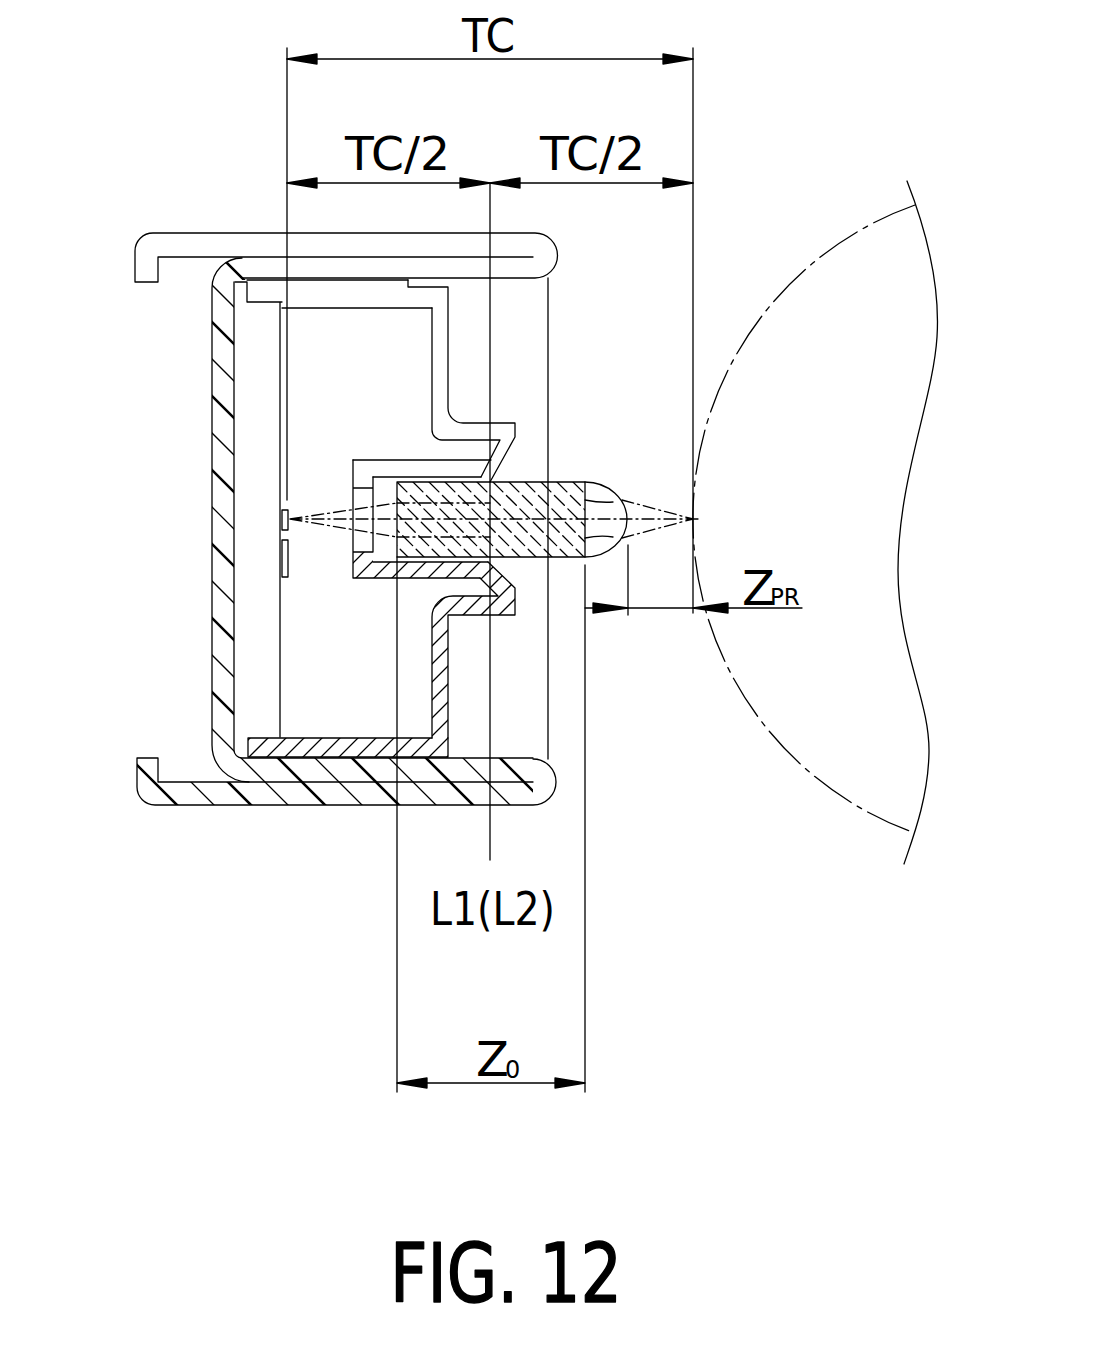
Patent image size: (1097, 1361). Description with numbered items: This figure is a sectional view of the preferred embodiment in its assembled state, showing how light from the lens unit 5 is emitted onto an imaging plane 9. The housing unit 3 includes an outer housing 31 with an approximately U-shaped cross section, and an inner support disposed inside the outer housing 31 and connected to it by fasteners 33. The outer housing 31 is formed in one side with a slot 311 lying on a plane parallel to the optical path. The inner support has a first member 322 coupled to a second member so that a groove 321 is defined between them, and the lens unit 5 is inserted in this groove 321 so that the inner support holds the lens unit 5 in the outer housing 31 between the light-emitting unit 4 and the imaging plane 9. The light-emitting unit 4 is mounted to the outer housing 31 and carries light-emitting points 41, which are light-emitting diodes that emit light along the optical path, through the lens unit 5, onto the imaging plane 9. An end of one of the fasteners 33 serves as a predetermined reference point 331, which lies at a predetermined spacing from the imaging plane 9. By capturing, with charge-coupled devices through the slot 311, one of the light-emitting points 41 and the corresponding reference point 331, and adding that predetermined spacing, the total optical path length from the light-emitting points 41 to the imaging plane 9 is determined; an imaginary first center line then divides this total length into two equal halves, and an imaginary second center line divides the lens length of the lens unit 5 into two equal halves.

The housing unit 3 is at (195, 805).
The outer housing 31 is at (260, 805).
The slot 311 is at (348, 268).
The light-emitting unit 4 is at (234, 448).
The light-emitting points 41 is at (282, 519).
The lens unit 5 is at (522, 483).
The groove 321 is at (388, 535).
The first member 322 is at (347, 757).
The fasteners 33 is at (605, 483).
The predetermined reference point 331 is at (630, 508).
The imaging plane 9 is at (746, 700).